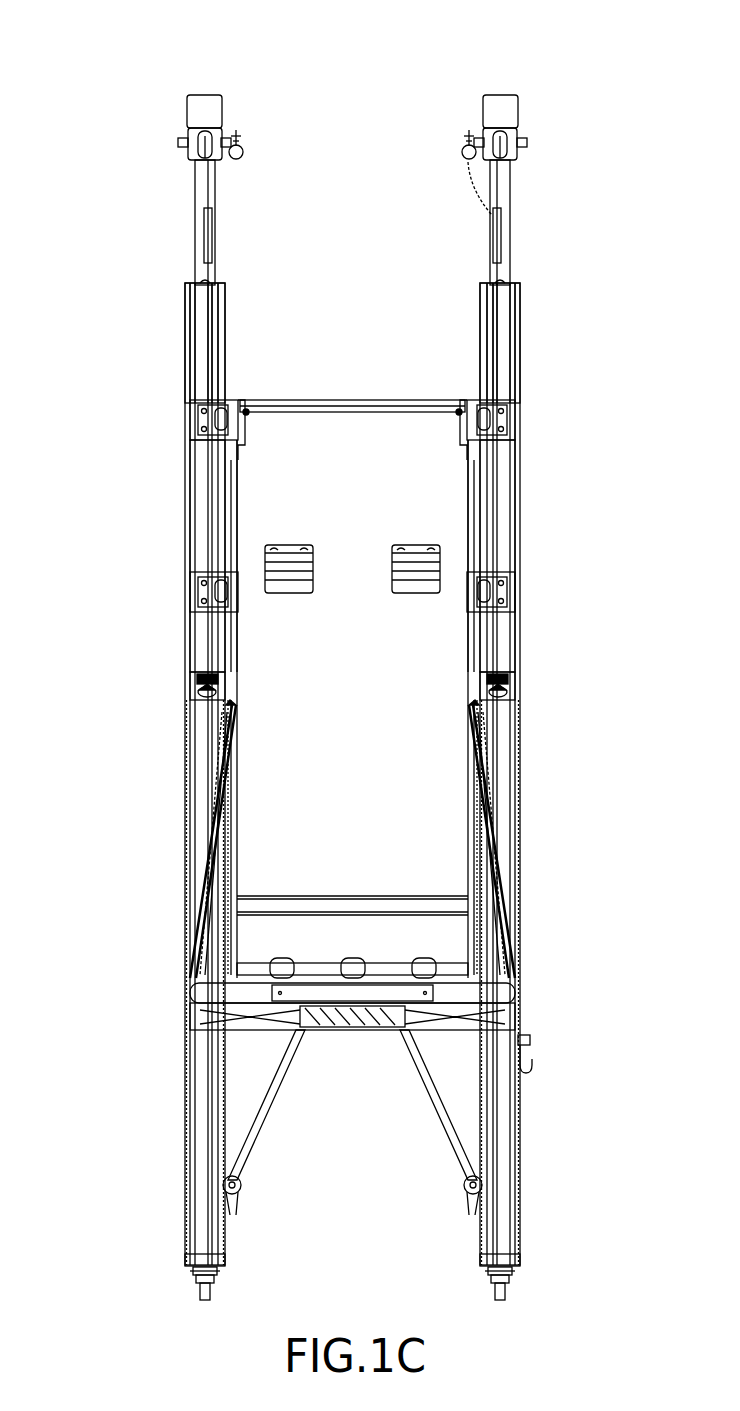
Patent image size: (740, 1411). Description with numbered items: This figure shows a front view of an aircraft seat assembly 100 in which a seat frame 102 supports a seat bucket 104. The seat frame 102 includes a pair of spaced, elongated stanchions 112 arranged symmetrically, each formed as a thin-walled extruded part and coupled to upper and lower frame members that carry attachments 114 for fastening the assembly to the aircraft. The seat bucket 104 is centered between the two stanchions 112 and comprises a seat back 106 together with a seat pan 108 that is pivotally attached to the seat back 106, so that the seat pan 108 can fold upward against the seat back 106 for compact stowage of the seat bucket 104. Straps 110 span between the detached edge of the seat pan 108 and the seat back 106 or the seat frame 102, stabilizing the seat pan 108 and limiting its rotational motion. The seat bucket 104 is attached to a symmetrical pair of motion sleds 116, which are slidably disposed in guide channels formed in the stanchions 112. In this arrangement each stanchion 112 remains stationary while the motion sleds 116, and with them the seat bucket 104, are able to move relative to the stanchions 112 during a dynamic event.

The aircraft seat assembly 100 is at (164, 38).
The seat frame 102 is at (512, 332).
The seat bucket 104 is at (218, 795).
The seat back 106 is at (258, 690).
The seat pan 108 is at (192, 974).
The straps 110 is at (218, 877).
The stanchion 112 is at (205, 332).
The attachments 114 is at (505, 114).
The motion sled 116 is at (205, 502).